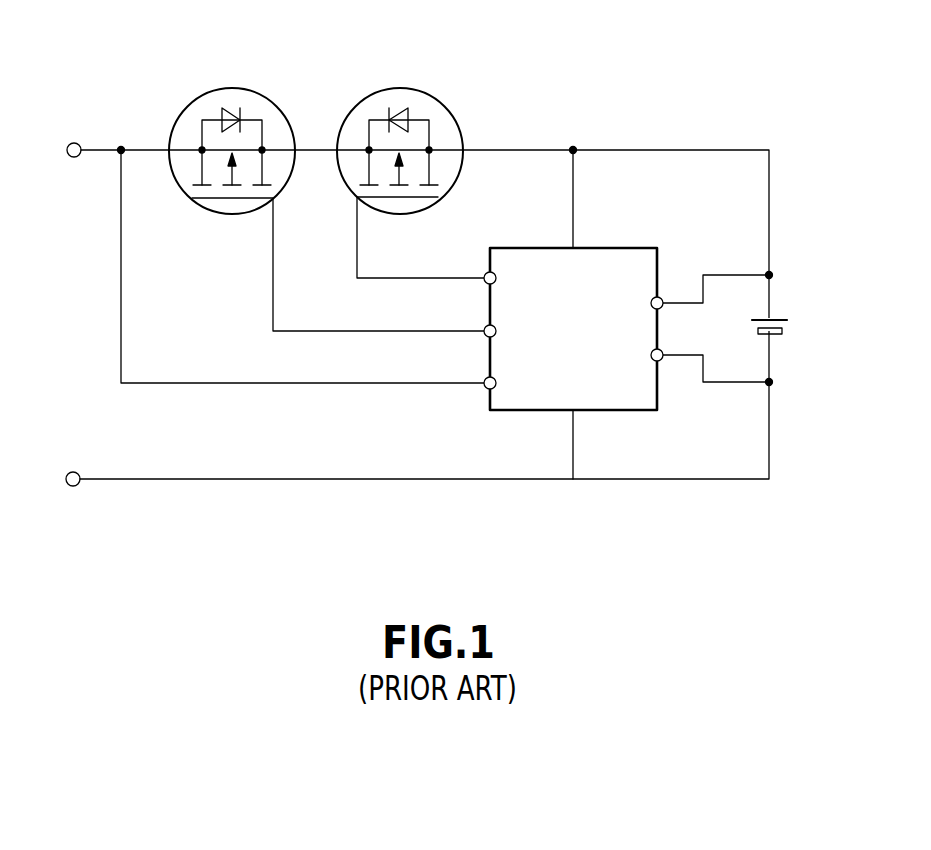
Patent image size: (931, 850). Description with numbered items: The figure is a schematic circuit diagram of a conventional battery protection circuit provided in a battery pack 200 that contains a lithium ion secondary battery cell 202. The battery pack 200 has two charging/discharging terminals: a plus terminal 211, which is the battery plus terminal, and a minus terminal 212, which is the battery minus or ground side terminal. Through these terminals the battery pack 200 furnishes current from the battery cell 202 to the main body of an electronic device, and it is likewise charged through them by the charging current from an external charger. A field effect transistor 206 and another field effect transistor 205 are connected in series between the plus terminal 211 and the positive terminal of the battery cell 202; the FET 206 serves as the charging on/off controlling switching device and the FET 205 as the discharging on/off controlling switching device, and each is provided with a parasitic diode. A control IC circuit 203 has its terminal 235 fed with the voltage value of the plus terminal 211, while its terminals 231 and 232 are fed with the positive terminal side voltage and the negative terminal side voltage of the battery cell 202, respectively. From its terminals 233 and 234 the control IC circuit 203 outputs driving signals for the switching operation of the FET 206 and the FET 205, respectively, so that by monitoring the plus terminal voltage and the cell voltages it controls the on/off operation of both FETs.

The battery pack 200 is at (539, 131).
The lithium ion secondary battery cell 202 is at (781, 318).
The control IC circuit 203 is at (620, 247).
The field effect transistor 205 is at (255, 90).
The field effect transistor 206 is at (418, 88).
The plus terminal 211 is at (72, 143).
The minus terminal 212 is at (72, 472).
The terminal 231 is at (662, 298).
The terminal 232 is at (662, 360).
The terminal 233 is at (484, 273).
The terminal 234 is at (484, 326).
The terminal 235 is at (484, 389).